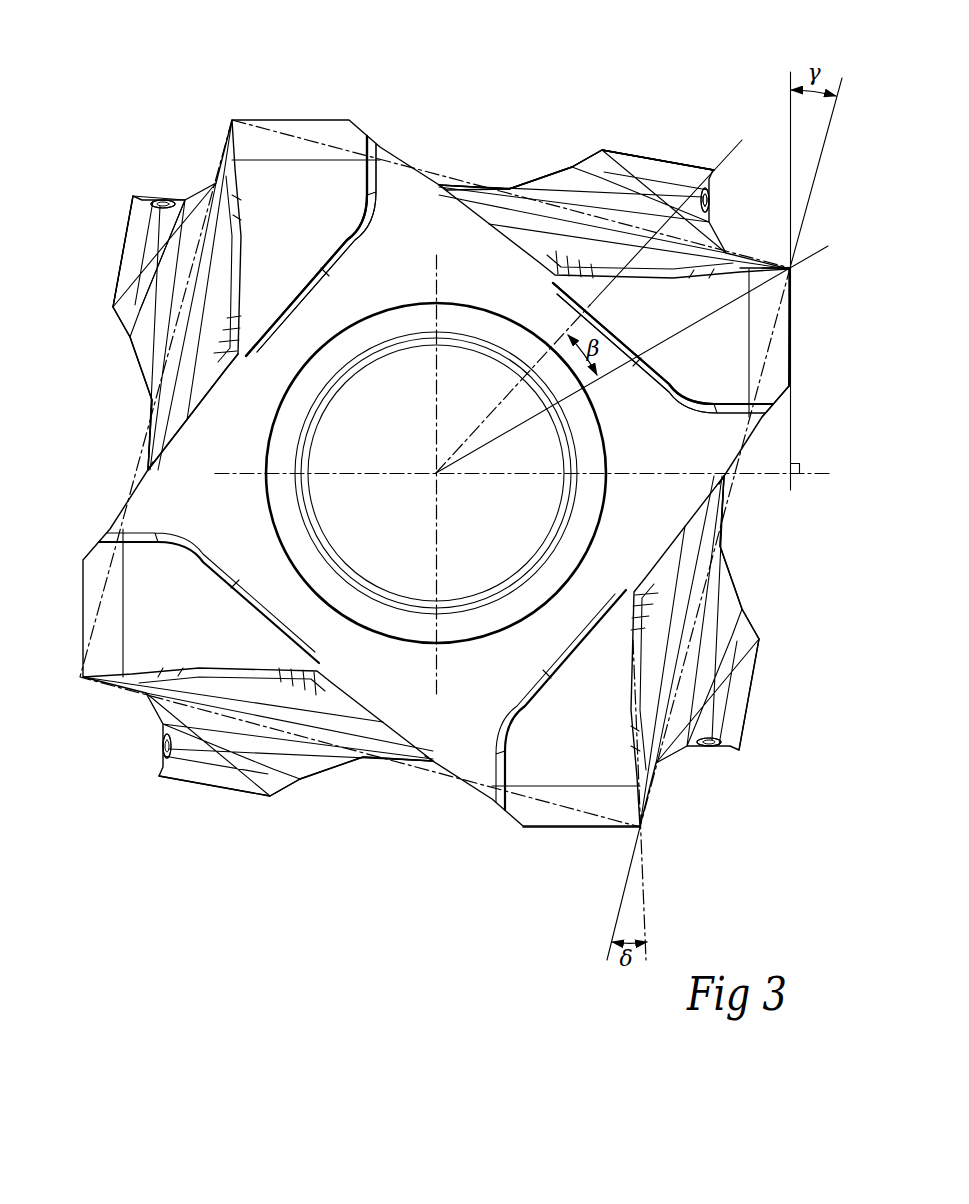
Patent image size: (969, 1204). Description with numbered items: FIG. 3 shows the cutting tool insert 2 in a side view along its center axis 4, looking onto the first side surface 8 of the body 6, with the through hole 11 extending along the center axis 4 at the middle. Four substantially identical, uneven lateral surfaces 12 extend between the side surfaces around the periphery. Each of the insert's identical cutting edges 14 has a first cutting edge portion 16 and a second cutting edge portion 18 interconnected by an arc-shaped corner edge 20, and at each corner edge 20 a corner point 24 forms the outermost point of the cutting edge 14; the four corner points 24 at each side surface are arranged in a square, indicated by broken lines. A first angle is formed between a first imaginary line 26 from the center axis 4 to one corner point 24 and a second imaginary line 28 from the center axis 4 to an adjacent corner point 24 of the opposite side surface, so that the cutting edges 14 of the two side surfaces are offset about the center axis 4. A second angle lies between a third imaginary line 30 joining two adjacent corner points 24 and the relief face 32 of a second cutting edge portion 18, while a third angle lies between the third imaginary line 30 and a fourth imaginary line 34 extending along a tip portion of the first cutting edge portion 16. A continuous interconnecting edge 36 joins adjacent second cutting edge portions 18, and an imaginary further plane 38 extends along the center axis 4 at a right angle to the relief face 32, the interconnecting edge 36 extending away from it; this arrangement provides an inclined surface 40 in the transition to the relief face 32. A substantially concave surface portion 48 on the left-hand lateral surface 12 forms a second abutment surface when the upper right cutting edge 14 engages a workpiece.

The cutting tool insert 2 is at (412, 86).
The center axis 4 is at (436, 473).
The body 6 is at (165, 245).
The first side surface 8 is at (397, 245).
The through hole 11 is at (364, 423).
The lateral surface 12 is at (190, 320).
The cutting edge 14 is at (803, 253).
The first cutting edge portion 16 is at (243, 248).
The second cutting edge portion 18 is at (705, 174).
The corner edge 20 is at (767, 268).
The corner point 24 is at (232, 120).
The first imaginary line 26 is at (663, 344).
The second imaginary line 28 is at (600, 284).
The third imaginary line 30 is at (757, 381).
The relief face 32 is at (801, 342).
The fourth imaginary line 34 is at (647, 888).
The continuous interconnecting edge 36 is at (712, 217).
The imaginary further plane 38 is at (630, 478).
The inclined surface 40 is at (633, 216).
The substantially concave surface portion 48 is at (186, 380).